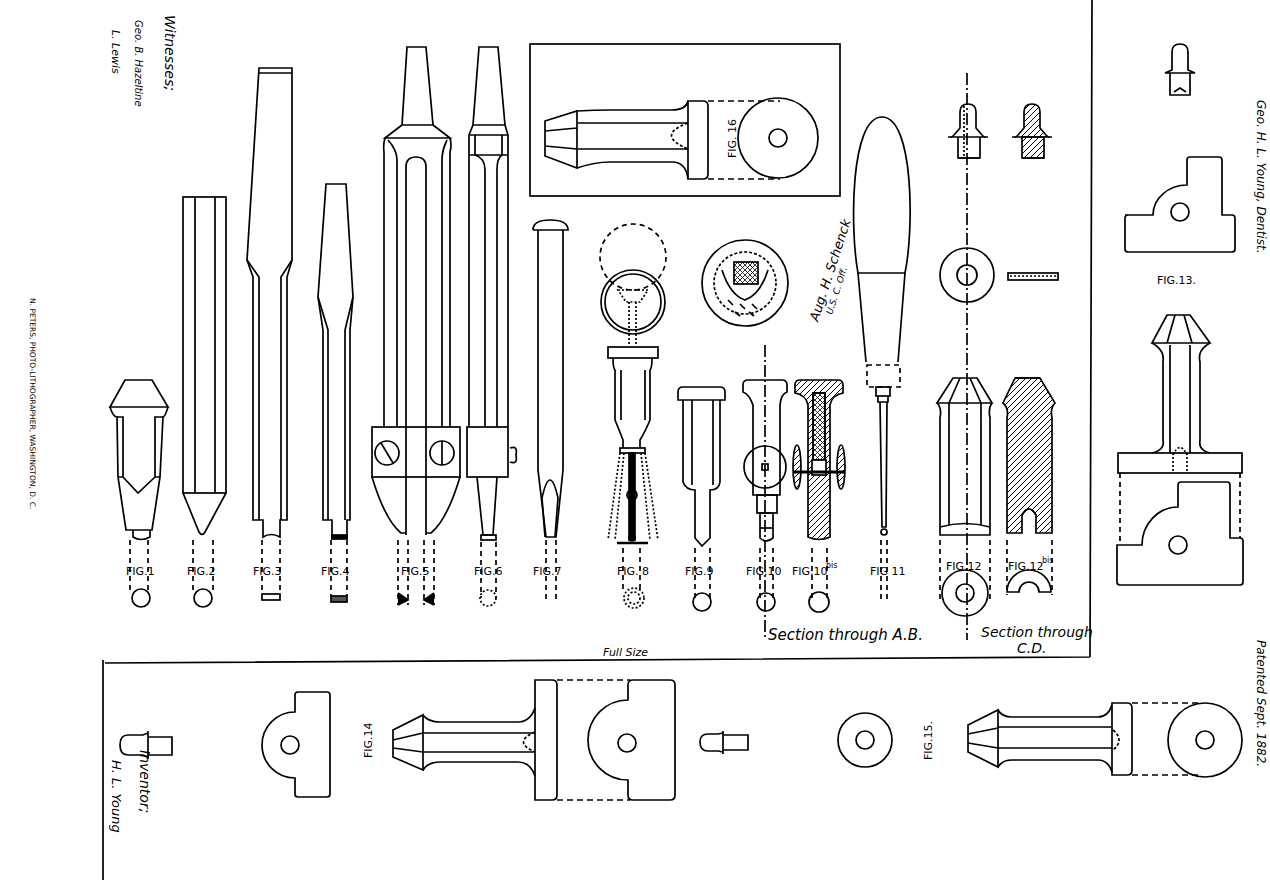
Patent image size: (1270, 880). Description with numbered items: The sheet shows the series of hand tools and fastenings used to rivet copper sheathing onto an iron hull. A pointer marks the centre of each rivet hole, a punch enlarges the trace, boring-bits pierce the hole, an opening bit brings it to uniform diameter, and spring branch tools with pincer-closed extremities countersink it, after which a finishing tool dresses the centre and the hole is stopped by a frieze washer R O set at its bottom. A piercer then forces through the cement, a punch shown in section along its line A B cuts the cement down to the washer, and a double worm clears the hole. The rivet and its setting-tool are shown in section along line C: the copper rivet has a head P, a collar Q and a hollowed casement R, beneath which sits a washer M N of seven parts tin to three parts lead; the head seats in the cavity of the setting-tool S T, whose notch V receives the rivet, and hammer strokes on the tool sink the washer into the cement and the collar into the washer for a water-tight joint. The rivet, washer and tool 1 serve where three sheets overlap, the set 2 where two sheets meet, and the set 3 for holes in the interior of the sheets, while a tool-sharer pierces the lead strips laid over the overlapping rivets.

In FIG. 8, the casement R is at (632, 529).
In FIG. 12, the casement R is at (1001, 166).
In FIG. 8, the washer O is at (642, 573).
In FIG. 10, the section line A is at (770, 422).
In FIG. 10, the section line B is at (764, 570).
In FIG. 12, the section line C is at (972, 356).
In FIG. 12, the head P is at (1000, 125).
In FIG. 12, the collar Q is at (1001, 138).
In FIG. 12, the washer M is at (975, 275).
In FIG. 12, the washer N is at (1027, 272).
In FIG. 12, the setting-tool S is at (964, 385).
In FIG. 12 bis, the setting-tool S is at (1027, 372).
In FIG. 12, the setting-tool T is at (959, 469).
In FIG. 12 bis, the setting-tool T is at (1032, 455).
In FIG. 12 bis, the notch in chisel body V is at (1033, 528).
In FIG. 13, the rivet, washer, and setting-tool No. 1 is at (1180, 314).
In FIG. 14, the rivet, washer, and setting-tool No. 2 is at (434, 740).
In FIG. 15, the rivet, washer, and setting-tool No. 3 is at (1040, 740).